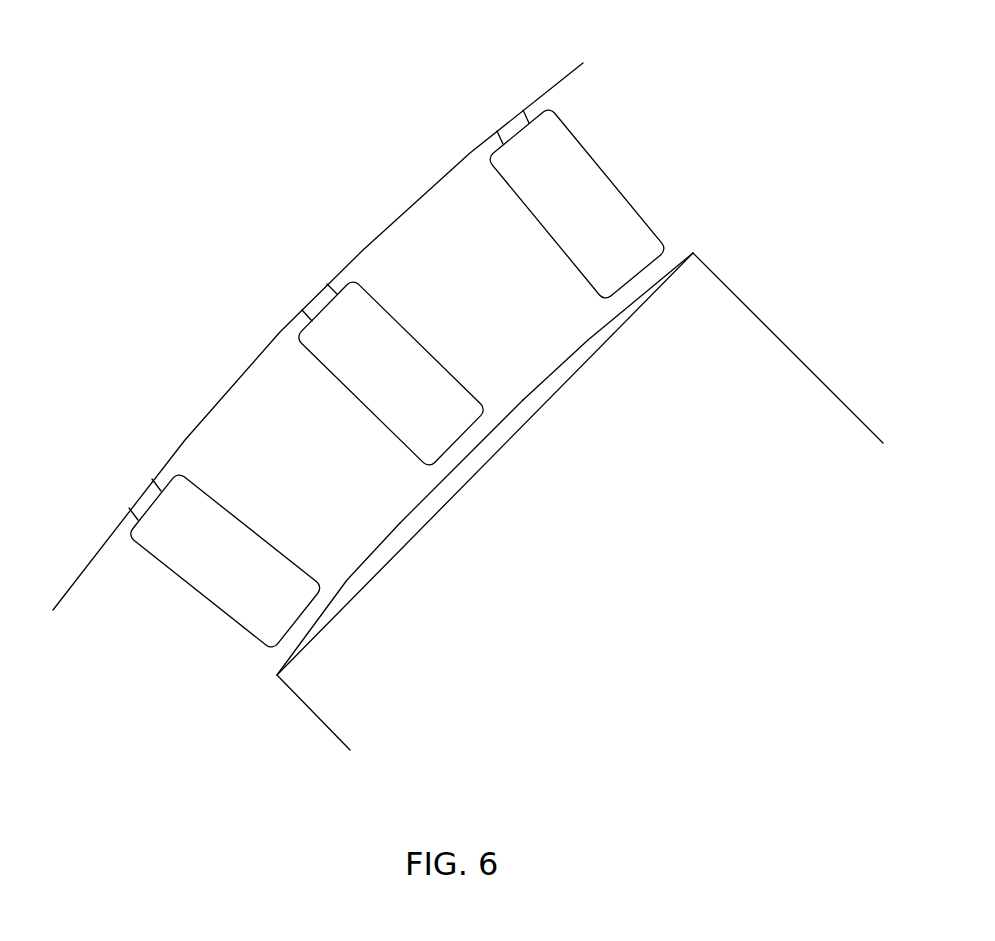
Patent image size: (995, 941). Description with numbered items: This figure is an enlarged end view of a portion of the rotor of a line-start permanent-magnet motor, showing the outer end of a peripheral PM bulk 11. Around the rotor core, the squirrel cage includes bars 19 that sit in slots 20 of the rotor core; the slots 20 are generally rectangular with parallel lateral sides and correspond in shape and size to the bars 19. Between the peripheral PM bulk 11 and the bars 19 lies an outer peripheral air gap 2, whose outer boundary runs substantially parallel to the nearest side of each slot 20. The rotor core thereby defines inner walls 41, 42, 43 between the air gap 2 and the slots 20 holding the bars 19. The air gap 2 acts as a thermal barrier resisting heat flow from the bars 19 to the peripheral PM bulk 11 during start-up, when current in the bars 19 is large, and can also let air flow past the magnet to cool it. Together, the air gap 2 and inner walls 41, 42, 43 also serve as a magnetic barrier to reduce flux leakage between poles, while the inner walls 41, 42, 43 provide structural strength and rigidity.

The outer peripheral air gap 2 is at (521, 428).
The peripheral PM bulk 11 is at (603, 540).
The bars 19 is at (537, 165).
The slots 20 is at (578, 137).
The inner wall 41 is at (307, 625).
The inner wall 42 is at (453, 455).
The inner wall 43 is at (638, 288).